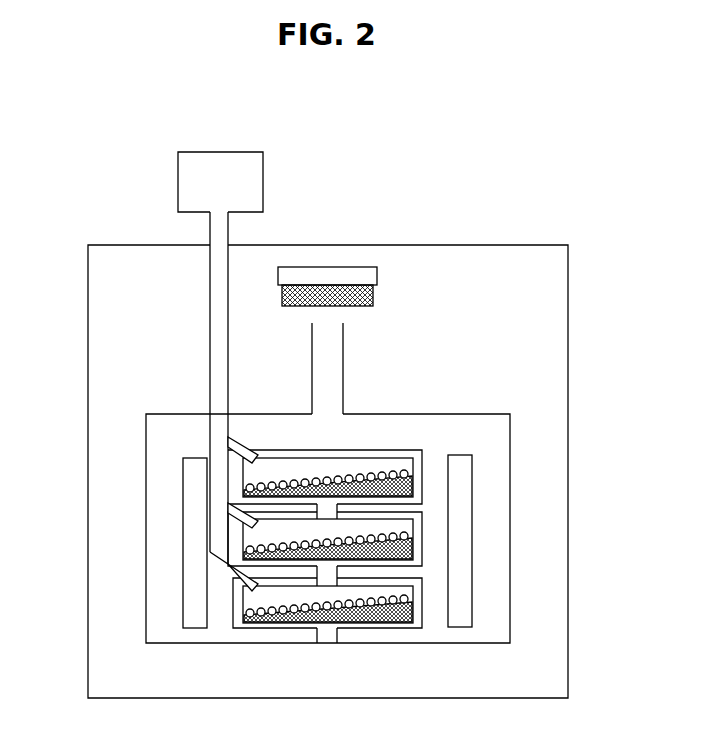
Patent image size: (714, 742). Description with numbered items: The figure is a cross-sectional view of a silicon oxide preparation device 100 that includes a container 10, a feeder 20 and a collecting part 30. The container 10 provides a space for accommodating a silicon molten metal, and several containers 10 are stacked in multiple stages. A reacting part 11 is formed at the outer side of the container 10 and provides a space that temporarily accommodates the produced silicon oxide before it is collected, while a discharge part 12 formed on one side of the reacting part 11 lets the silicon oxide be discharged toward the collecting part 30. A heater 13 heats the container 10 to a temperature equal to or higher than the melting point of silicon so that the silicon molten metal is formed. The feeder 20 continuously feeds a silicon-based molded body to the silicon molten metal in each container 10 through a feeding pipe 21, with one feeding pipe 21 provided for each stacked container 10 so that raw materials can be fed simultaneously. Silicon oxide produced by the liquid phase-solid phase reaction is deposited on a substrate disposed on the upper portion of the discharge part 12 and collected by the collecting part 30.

The silicon oxide preparation device 100 is at (62, 158).
The feeder 20 is at (183, 177).
The collecting part 30 is at (327, 276).
The discharge part 12 is at (345, 343).
The reacting part 11 is at (146, 432).
The heater 13 is at (193, 477).
The container 10 is at (230, 490).
The feeding pipe 21 is at (238, 447).